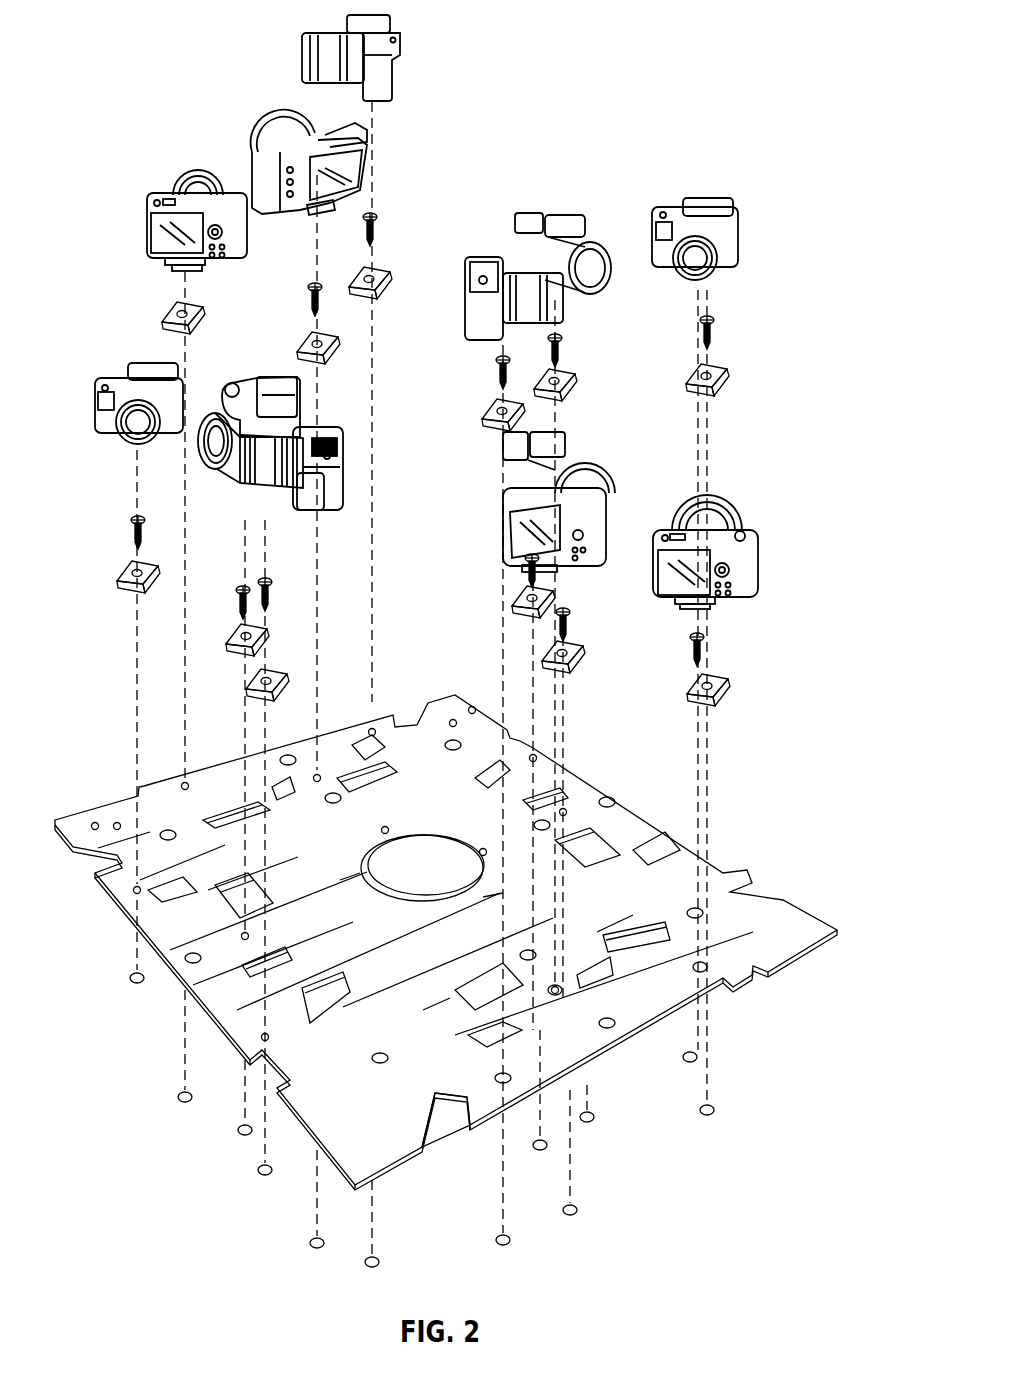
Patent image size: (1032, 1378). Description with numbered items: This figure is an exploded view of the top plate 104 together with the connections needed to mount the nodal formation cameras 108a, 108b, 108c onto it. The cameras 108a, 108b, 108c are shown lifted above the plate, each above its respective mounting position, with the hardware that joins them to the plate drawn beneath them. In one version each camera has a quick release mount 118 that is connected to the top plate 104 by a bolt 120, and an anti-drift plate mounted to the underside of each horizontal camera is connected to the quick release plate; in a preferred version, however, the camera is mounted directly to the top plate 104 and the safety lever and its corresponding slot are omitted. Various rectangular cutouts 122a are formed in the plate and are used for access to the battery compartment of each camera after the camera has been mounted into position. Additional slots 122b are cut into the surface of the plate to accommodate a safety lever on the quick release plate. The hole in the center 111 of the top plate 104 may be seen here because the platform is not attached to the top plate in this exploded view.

The top plate 104 is at (523, 935).
The camera 108a is at (707, 592).
The camera 108b is at (583, 555).
The camera 108c is at (597, 452).
The hole in the center 111 is at (367, 870).
The quick release mount 118 is at (728, 380).
The bolt 120 is at (715, 337).
The rectangular cutout 122a is at (443, 1128).
The slot 122b is at (497, 1045).